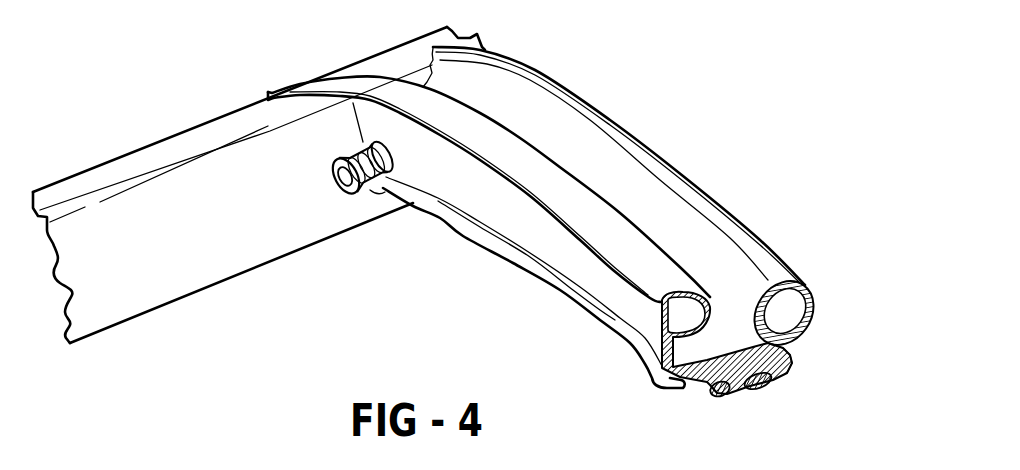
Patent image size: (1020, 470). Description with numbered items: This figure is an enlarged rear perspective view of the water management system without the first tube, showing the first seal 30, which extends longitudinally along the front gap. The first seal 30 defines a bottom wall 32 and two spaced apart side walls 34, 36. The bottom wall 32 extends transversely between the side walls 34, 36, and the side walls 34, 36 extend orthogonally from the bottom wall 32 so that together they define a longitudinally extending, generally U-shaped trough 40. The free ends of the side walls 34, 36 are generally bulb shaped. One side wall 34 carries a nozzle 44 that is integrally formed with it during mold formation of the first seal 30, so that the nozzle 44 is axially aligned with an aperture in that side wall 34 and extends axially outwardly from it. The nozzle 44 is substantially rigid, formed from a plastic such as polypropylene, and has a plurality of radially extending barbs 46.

The first seal 30 is at (614, 82).
The bottom wall 32 is at (712, 396).
The side wall 34 is at (630, 327).
The side wall 36 is at (792, 357).
The trough 40 is at (735, 322).
The nozzle 44 is at (383, 192).
The barbs 46 is at (328, 162).